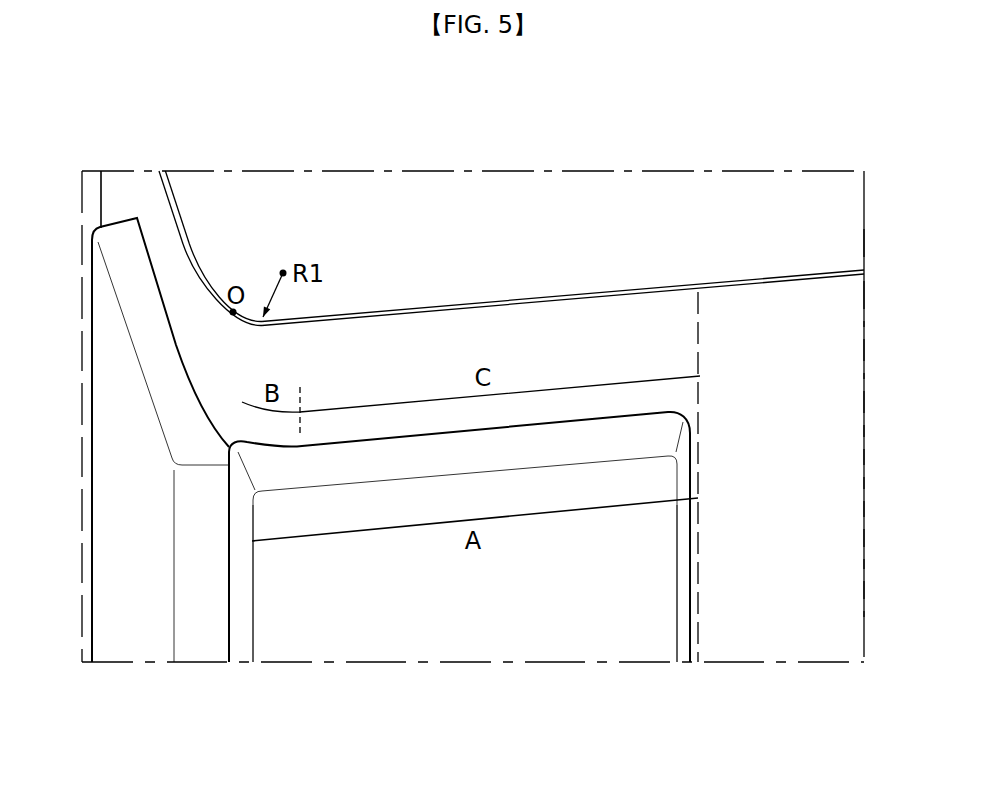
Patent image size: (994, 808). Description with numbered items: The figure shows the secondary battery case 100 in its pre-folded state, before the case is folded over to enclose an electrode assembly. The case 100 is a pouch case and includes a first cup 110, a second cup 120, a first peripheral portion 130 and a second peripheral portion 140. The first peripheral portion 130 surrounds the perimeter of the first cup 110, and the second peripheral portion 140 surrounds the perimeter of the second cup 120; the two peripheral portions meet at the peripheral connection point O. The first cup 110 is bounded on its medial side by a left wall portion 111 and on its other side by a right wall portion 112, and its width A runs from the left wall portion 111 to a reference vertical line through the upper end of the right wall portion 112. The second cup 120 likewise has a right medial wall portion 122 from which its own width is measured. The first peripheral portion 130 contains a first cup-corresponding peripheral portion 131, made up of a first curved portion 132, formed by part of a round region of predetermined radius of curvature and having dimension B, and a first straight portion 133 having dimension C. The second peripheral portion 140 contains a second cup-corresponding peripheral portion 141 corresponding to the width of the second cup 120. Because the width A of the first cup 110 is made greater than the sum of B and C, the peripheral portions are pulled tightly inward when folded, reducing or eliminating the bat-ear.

The secondary battery case 100 is at (100, 109).
The first cup 110 is at (473, 642).
The left (medial) wall portion 111 is at (242, 643).
The right wall portion 112 is at (683, 613).
The second cup 120 is at (110, 461).
The right (medial) wall portion 122 is at (195, 650).
The first peripheral portion 130 is at (850, 465).
The first cup-corresponding peripheral portion 131 is at (498, 283).
The first curved portion 132 is at (282, 319).
The first straight portion 133 is at (597, 294).
The second peripheral portion 140 is at (113, 198).
The second cup-corresponding peripheral portion 141 is at (188, 207).